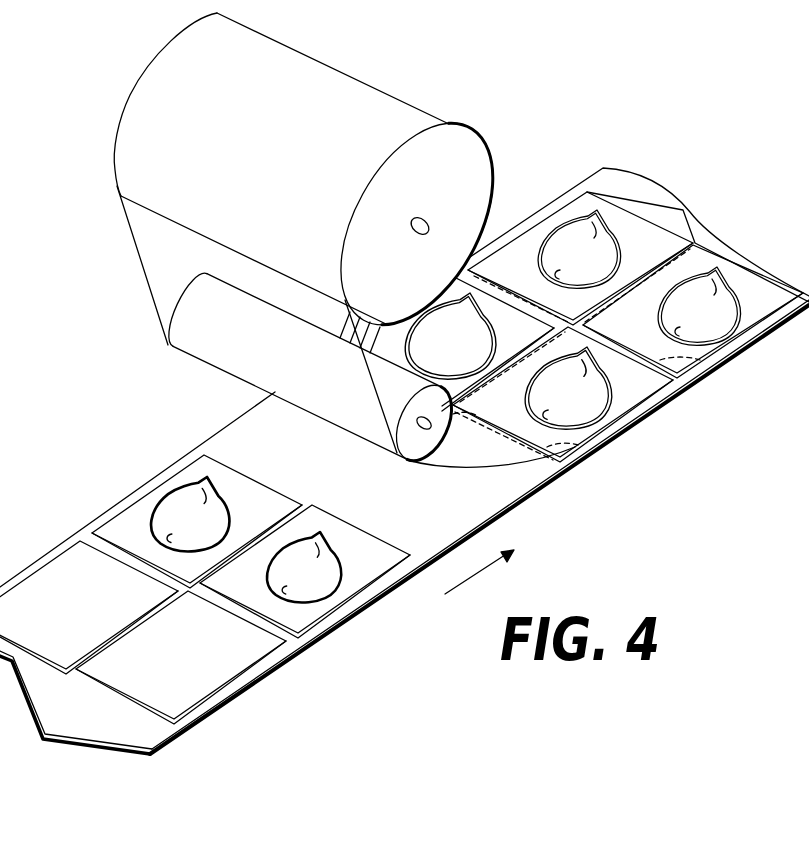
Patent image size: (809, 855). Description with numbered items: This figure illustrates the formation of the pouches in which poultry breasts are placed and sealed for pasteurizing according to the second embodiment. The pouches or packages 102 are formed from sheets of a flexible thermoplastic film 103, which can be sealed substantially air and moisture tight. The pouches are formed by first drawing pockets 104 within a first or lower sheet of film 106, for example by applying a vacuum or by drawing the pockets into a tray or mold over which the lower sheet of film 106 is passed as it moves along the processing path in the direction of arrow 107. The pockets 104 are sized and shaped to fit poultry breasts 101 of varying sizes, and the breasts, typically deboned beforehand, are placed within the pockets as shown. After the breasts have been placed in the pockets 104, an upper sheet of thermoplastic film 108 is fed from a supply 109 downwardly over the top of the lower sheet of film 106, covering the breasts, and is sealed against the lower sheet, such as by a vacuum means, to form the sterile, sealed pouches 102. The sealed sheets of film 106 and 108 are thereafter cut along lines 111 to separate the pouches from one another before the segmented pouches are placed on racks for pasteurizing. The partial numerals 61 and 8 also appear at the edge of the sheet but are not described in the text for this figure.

The shaped article 101 is at (304, 556).
The cover web 102 is at (697, 262).
The carrier substrate 103 is at (139, 267).
The cell 104 is at (87, 605).
The pressure roll 106 is at (358, 478).
The direction of travel 107 is at (470, 580).
The supply roll 108 is at (307, 85).
The core 109 is at (432, 226).
The frame 111 is at (700, 358).
The numeral 61 (adjacent figure) 61 is at (0, 80).
The numeral 8 (partial) 8 is at (4, 132).